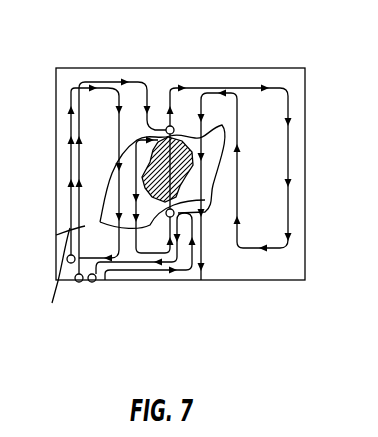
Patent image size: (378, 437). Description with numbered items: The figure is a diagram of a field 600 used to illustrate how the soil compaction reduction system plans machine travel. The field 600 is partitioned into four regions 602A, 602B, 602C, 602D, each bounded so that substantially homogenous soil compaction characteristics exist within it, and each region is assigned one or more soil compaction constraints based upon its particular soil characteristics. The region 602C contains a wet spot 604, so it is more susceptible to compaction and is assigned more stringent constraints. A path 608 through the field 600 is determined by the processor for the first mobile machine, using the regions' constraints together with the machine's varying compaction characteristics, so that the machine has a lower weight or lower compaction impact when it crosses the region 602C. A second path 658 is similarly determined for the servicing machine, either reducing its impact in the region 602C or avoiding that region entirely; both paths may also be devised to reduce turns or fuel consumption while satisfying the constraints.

The field 600 is at (243, 322).
The region 602A is at (128, 280).
The region 602B is at (54, 67).
The region 602C is at (258, 68).
The region 602D is at (180, 68).
The wet spot 604 is at (193, 172).
The path 608 is at (61, 279).
The path 658 is at (100, 222).